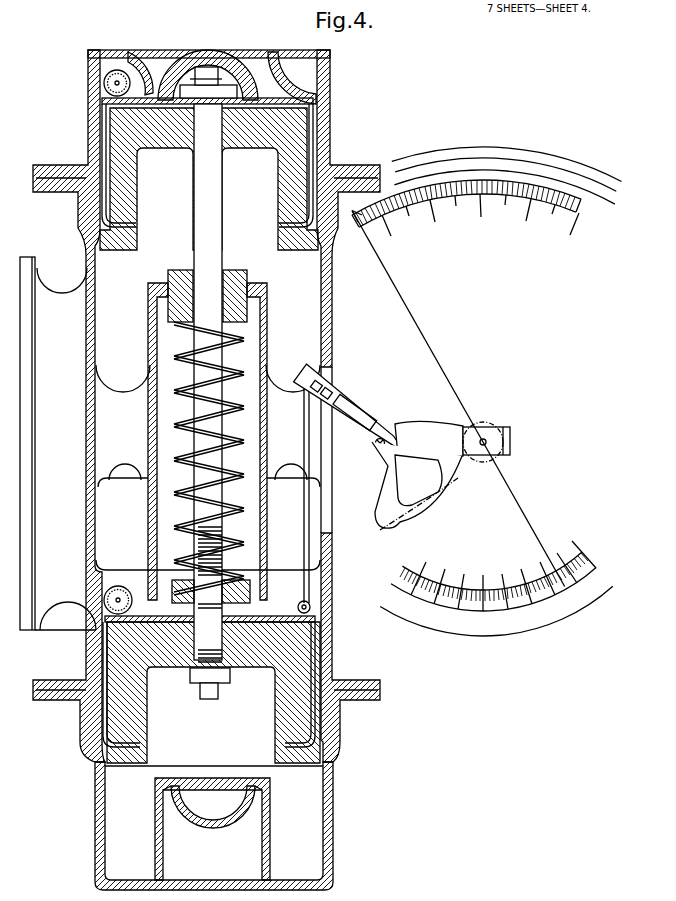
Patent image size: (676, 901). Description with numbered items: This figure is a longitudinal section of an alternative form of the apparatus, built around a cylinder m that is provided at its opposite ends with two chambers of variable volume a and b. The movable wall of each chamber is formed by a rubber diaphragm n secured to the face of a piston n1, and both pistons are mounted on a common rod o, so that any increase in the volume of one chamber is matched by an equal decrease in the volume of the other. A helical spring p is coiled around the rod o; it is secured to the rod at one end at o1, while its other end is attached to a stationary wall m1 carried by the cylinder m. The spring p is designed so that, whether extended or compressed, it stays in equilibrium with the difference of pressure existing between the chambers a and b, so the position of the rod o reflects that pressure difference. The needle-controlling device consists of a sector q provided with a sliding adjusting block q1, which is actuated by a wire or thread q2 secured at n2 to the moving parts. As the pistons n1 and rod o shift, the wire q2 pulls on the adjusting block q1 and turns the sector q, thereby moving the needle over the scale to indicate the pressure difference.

The chamber of variable volume a is at (210, 332).
The chamber of variable volume b is at (214, 826).
The cylinder m is at (92, 537).
The stationary wall m1 is at (250, 316).
The rubber diaphragm n is at (318, 152).
The piston n1 is at (283, 213).
The securing point of wire n2 is at (311, 607).
The common rod o is at (208, 383).
The spring securing point o1 is at (250, 588).
The helical spring p is at (244, 508).
The sector q is at (425, 513).
The sliding adjusting block q1 is at (325, 378).
The wire or thread q2 is at (306, 538).